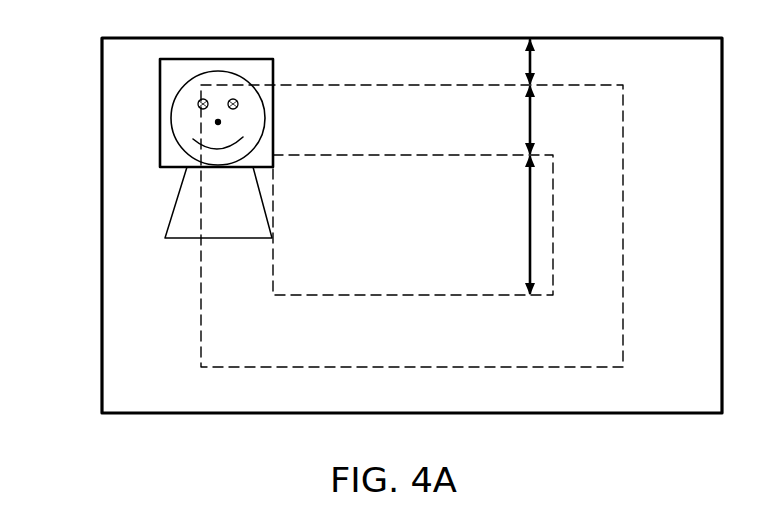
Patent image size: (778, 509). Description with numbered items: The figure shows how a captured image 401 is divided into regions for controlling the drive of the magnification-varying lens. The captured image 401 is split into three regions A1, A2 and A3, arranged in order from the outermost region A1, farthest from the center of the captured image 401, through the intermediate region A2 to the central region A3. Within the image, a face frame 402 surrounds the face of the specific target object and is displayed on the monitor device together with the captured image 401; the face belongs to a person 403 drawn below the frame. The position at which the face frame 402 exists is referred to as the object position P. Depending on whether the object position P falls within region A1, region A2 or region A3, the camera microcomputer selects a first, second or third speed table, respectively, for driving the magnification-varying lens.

The captured image 401 is at (102, 203).
The face frame 402 is at (277, 103).
The person 403 is at (170, 227).
The object position P is at (201, 118).
The region A1 is at (516, 62).
The region A2 is at (516, 120).
The region A3 is at (516, 225).